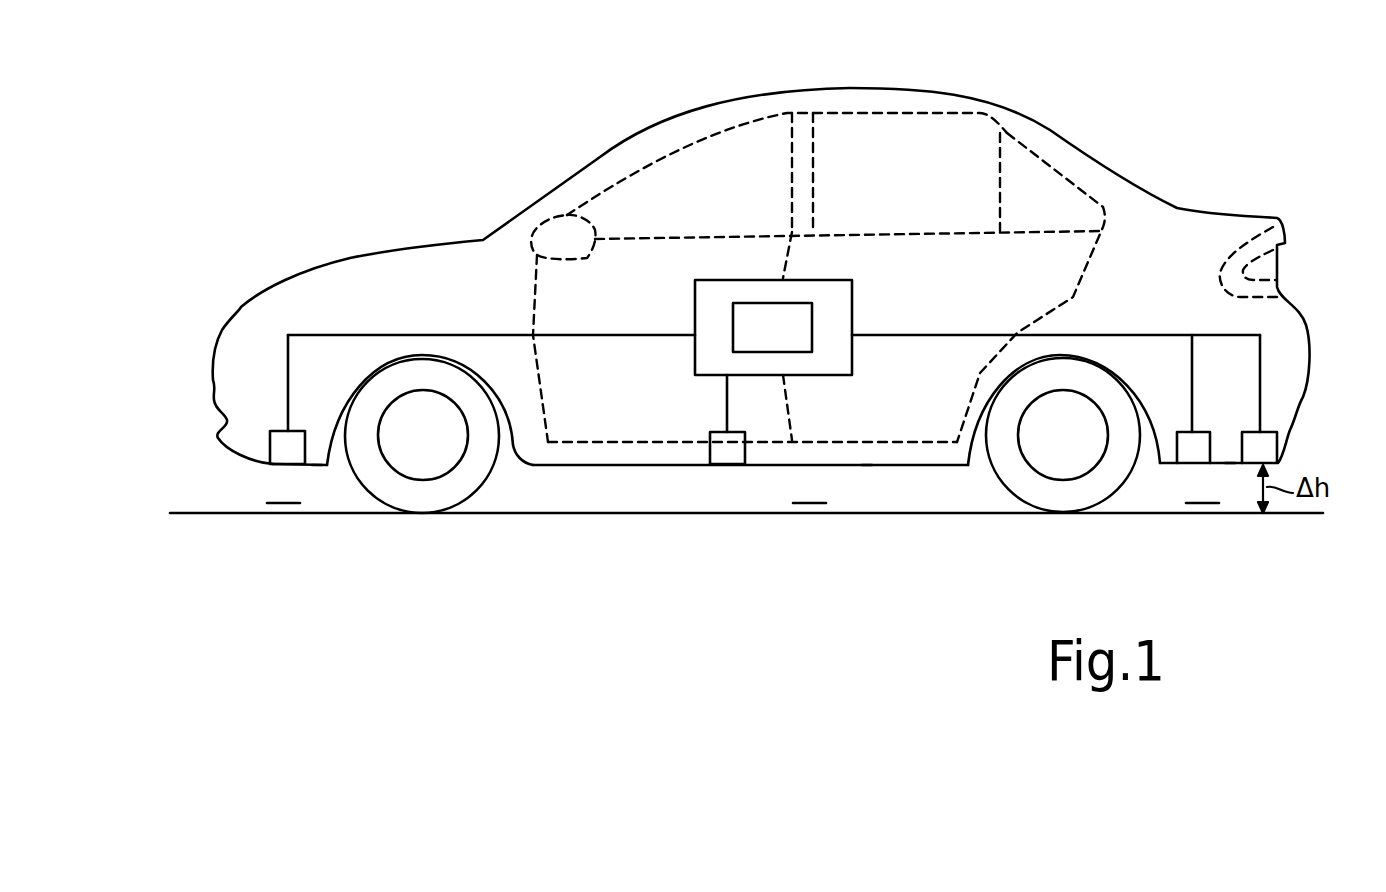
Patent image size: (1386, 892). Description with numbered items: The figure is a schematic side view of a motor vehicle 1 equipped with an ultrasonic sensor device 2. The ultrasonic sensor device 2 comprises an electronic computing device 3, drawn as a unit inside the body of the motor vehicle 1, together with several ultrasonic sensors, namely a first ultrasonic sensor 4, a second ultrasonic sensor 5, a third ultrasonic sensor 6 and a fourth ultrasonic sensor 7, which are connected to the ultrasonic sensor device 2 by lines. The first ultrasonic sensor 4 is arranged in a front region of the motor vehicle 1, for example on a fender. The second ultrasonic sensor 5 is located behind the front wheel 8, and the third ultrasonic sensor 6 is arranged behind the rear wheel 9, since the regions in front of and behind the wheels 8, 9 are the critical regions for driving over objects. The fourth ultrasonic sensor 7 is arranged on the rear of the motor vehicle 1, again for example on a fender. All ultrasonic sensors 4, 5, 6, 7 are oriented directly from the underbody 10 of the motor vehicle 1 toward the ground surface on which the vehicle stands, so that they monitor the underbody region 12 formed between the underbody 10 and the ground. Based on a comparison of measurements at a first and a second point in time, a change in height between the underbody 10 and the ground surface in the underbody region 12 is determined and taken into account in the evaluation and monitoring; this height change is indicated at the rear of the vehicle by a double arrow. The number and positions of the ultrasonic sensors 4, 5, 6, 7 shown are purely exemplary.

The motor vehicle 1 is at (1063, 137).
The ultrasonic sensor device 2 is at (828, 280).
The electronic computing device 3 is at (752, 303).
The first ultrasonic sensor 4 is at (300, 431).
The second ultrasonic sensor 5 is at (713, 432).
The third ultrasonic sensor 6 is at (1200, 432).
The fourth ultrasonic sensor 7 is at (1267, 432).
The front wheel 8 is at (418, 490).
The rear wheel 9 is at (1057, 490).
The underbody 10 is at (317, 467).
The underbody region 12 is at (743, 487).